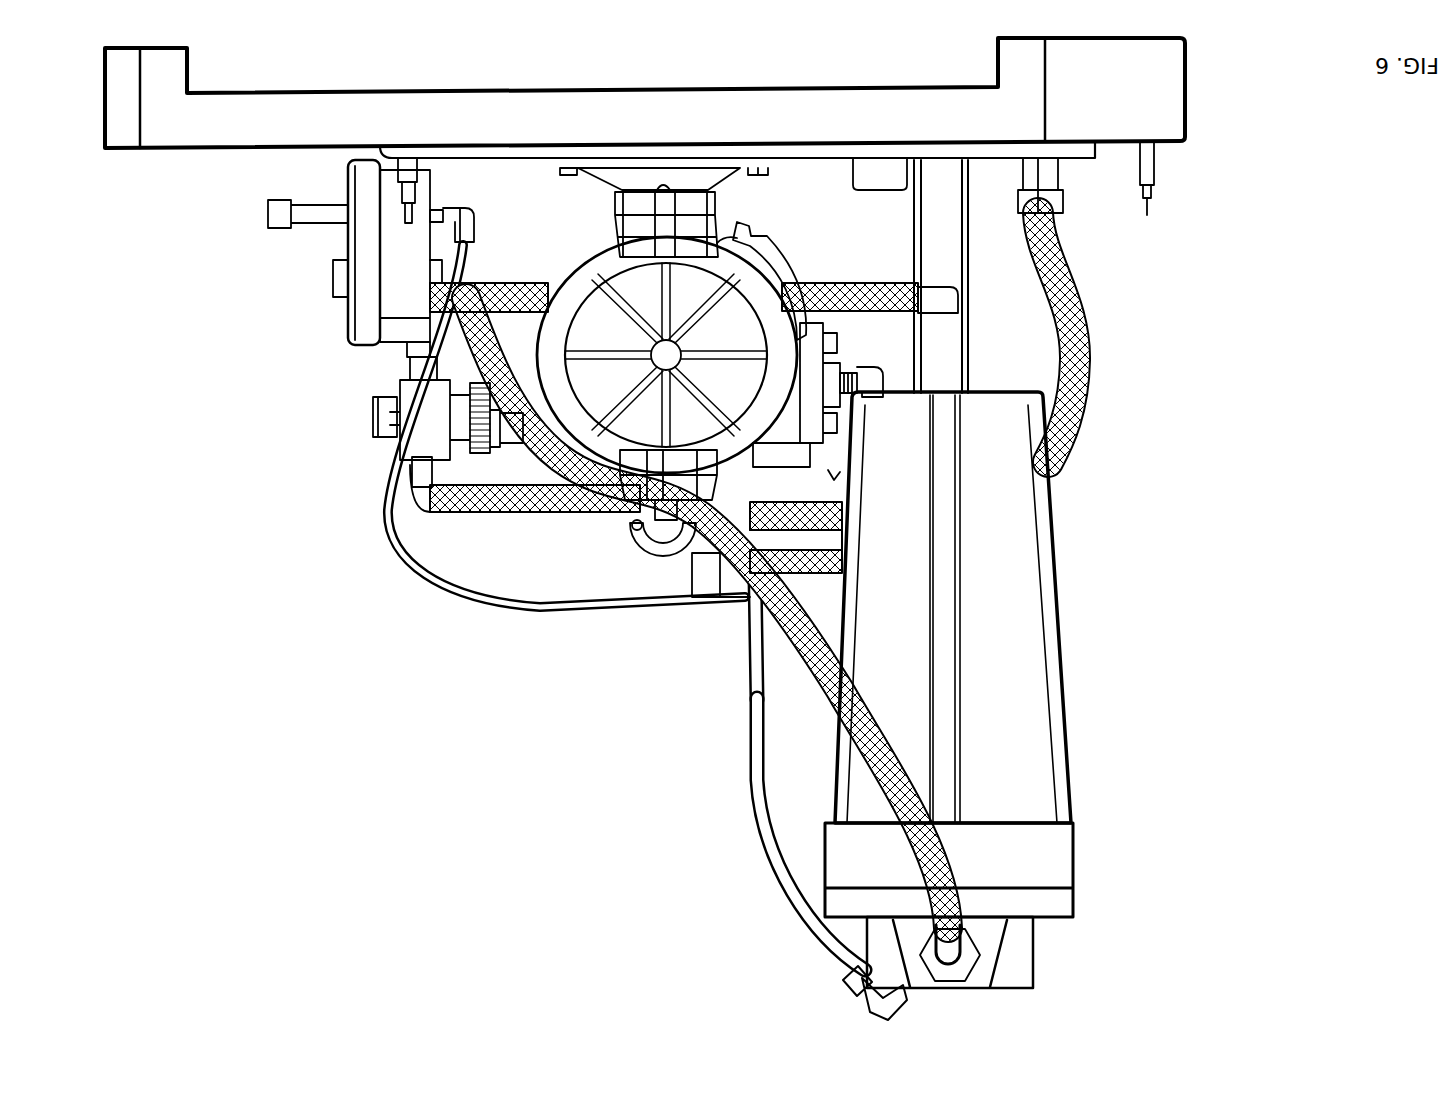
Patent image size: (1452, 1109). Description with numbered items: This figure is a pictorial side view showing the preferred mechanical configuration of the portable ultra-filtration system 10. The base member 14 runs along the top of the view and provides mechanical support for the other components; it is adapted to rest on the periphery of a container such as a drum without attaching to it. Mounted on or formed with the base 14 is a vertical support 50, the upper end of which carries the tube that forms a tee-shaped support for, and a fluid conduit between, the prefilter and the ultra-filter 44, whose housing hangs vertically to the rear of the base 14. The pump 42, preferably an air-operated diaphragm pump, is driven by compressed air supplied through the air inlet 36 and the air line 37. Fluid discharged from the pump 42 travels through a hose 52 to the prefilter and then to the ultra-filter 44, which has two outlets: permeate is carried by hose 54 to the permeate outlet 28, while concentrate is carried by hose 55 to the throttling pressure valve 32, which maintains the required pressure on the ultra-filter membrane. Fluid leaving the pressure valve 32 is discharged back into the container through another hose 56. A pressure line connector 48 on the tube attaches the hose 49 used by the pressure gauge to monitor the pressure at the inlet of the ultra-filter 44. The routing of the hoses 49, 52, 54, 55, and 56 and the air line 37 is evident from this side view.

The portable ultra-filtration system 10 is at (541, 791).
The base member 14 is at (262, 106).
The permeate outlet 28 is at (342, 290).
The throttling pressure valve 32 is at (382, 440).
The air inlet 36 is at (280, 218).
The air line 37 is at (866, 380).
The pump 42 is at (590, 367).
The ultra-filter 44 is at (1030, 703).
The pressure line connector 48 is at (864, 1002).
The hose 49 is at (794, 922).
The vertical support 50 is at (955, 267).
The hose 52 is at (750, 603).
The hose 54 is at (834, 698).
The hose 55 is at (507, 281).
The hose 56 is at (1097, 383).